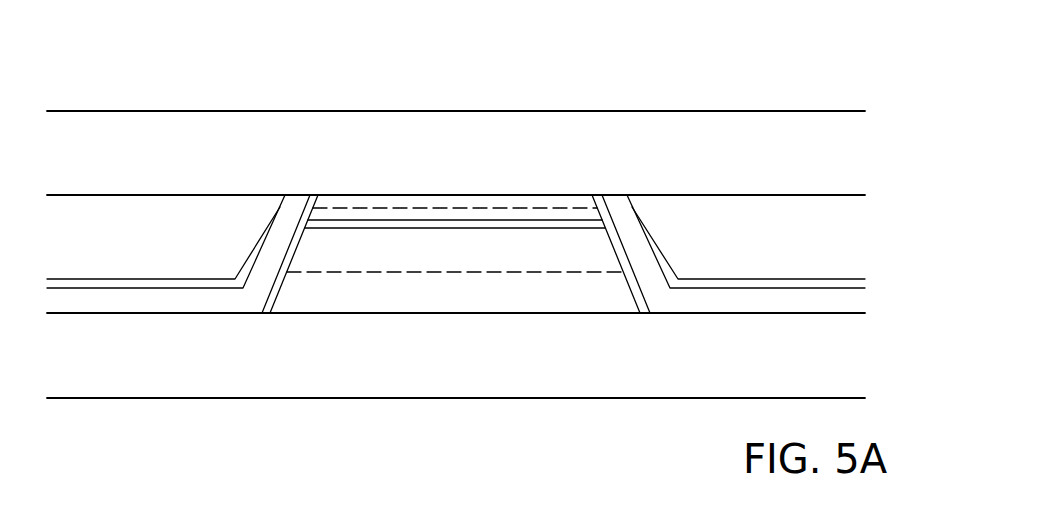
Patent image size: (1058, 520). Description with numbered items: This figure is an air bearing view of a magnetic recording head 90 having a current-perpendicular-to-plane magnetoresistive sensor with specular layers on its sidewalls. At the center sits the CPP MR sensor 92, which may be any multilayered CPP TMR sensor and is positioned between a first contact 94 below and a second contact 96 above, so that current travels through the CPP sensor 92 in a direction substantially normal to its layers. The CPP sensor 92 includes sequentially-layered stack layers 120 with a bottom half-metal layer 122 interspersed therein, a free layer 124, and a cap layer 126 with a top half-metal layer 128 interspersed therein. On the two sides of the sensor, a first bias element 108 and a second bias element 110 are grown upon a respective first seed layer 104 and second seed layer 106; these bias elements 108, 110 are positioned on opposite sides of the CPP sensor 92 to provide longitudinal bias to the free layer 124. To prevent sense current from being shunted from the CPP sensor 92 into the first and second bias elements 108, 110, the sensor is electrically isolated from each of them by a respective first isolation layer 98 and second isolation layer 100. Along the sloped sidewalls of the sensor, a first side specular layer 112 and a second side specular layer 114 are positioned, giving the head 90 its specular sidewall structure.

The magnetic recording head 90 is at (461, 63).
The CPP MR sensor 92 is at (594, 358).
The first contact 94 is at (82, 374).
The second contact 96 is at (82, 162).
The first isolation layer 98 is at (98, 303).
The second isolation layer 100 is at (698, 307).
The first seed layer 104 is at (170, 283).
The second seed layer 106 is at (755, 285).
The first bias element 108 is at (90, 236).
The second bias element 110 is at (857, 248).
The first side specular layer 112 is at (313, 202).
The second side specular layer 114 is at (605, 208).
The stack layers 120 is at (337, 255).
The bottom half-metal layer 122 is at (388, 273).
The free layer 124 is at (331, 224).
The cap layer 126 is at (387, 213).
The top half-metal layer 128 is at (465, 208).